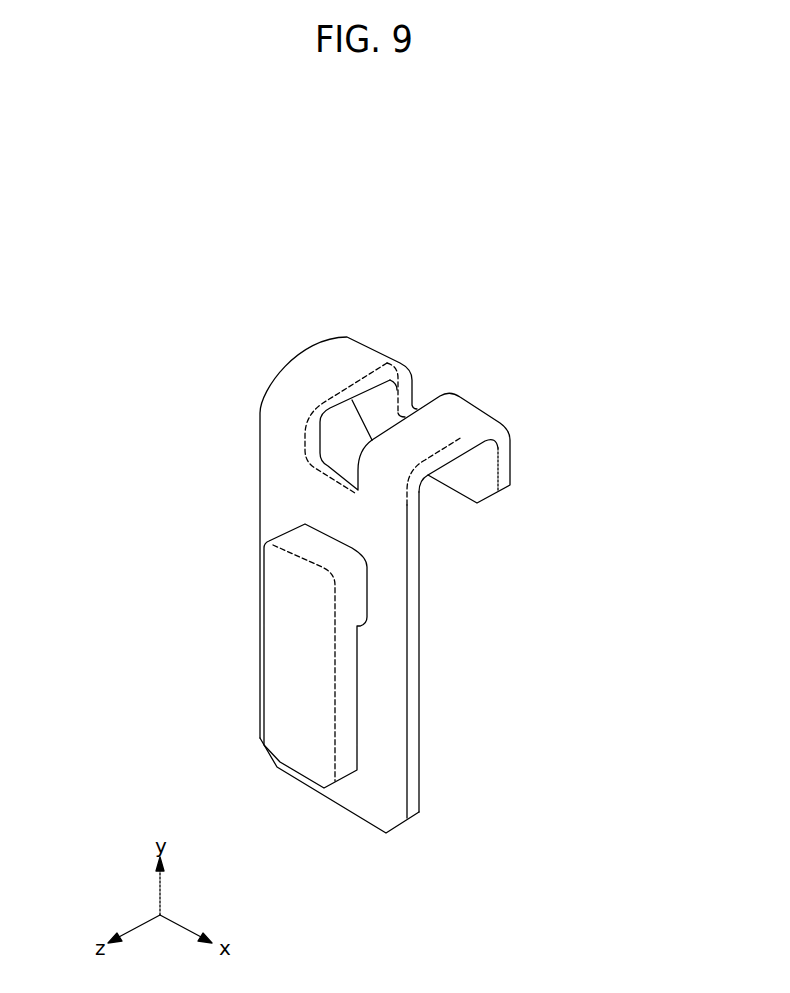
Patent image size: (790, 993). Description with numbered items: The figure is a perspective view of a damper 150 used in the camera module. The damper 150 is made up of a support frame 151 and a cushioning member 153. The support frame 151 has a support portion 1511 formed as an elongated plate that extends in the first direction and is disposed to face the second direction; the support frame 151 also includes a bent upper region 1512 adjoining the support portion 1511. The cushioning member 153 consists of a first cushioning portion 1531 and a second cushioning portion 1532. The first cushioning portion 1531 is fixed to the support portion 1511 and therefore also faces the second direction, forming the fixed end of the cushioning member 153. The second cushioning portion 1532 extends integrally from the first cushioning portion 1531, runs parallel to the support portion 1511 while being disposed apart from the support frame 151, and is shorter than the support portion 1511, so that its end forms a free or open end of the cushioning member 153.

The damper 150 is at (375, 583).
The support frame 151 is at (509, 591).
The support portion 1511 is at (500, 655).
The bent hook end 1512 is at (463, 437).
The cushioning member 153 is at (235, 640).
The first cushioning portion 1531 is at (303, 547).
The second cushioning portion 1532 is at (275, 605).